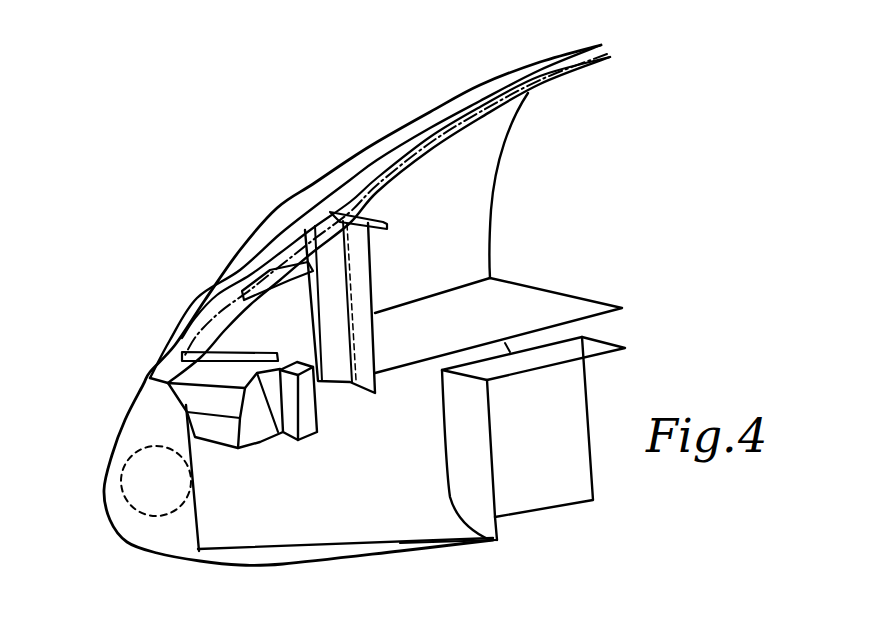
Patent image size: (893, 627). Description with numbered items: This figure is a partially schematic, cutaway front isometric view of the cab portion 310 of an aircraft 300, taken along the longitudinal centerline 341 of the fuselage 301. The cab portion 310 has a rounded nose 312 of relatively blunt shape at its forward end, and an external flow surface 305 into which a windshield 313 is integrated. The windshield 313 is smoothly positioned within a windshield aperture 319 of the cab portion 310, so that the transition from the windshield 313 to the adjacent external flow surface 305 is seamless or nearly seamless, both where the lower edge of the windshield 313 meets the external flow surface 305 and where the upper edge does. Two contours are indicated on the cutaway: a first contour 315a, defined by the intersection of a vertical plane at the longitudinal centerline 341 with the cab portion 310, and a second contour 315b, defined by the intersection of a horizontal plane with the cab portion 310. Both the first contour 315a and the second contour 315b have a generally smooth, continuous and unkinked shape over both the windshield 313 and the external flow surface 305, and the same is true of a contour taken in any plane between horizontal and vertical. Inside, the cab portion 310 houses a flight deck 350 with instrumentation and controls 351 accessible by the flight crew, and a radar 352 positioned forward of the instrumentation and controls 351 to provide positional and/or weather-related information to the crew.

The aircraft 300 is at (247, 91).
The fuselage 301 is at (418, 97).
The longitudinal centerline 341 is at (533, 80).
The cab portion 310 is at (383, 156).
The flight deck 350 is at (326, 288).
The external flow surface 305 is at (247, 203).
The first contour 315a is at (262, 250).
The second contour 315b is at (172, 322).
The instrumentation and controls 351 is at (243, 338).
The windshield aperture 319 is at (210, 382).
The windshield 313 is at (153, 338).
The radar 352 is at (143, 450).
The rounded nose 312 is at (172, 547).